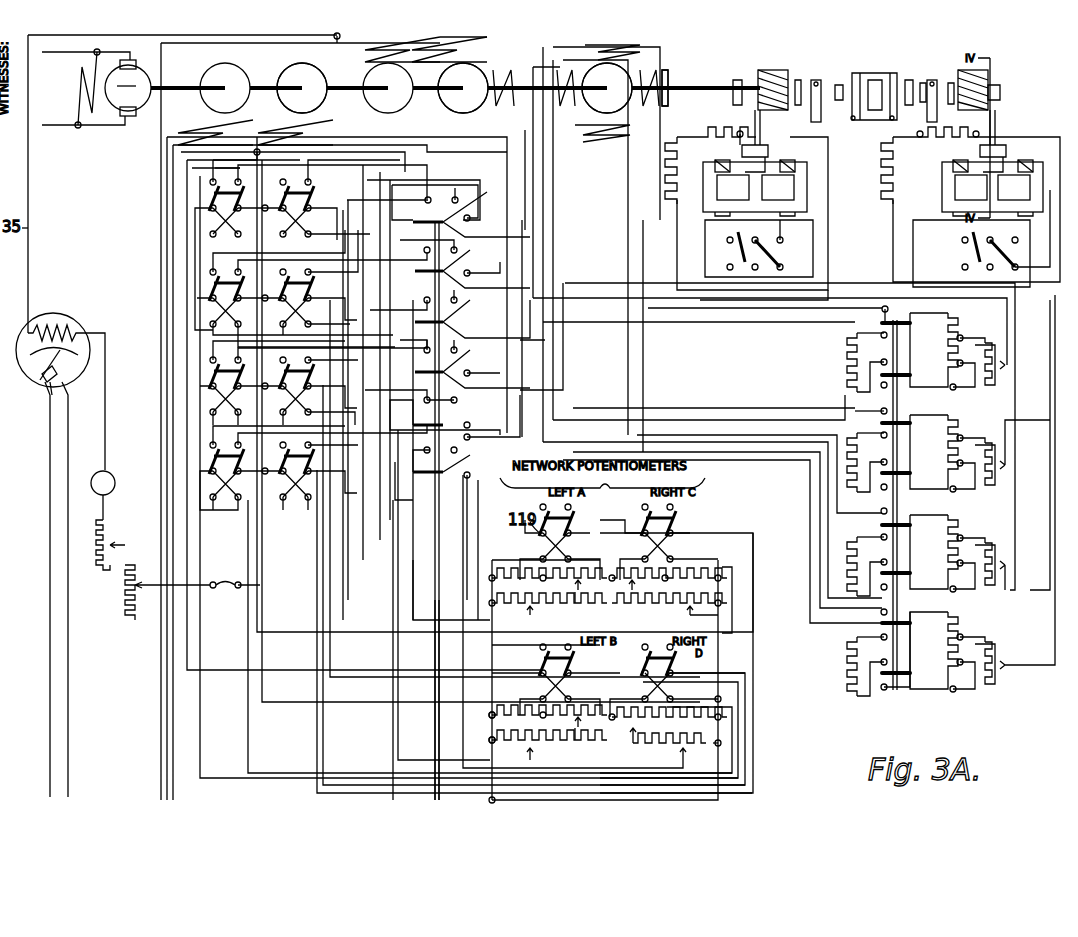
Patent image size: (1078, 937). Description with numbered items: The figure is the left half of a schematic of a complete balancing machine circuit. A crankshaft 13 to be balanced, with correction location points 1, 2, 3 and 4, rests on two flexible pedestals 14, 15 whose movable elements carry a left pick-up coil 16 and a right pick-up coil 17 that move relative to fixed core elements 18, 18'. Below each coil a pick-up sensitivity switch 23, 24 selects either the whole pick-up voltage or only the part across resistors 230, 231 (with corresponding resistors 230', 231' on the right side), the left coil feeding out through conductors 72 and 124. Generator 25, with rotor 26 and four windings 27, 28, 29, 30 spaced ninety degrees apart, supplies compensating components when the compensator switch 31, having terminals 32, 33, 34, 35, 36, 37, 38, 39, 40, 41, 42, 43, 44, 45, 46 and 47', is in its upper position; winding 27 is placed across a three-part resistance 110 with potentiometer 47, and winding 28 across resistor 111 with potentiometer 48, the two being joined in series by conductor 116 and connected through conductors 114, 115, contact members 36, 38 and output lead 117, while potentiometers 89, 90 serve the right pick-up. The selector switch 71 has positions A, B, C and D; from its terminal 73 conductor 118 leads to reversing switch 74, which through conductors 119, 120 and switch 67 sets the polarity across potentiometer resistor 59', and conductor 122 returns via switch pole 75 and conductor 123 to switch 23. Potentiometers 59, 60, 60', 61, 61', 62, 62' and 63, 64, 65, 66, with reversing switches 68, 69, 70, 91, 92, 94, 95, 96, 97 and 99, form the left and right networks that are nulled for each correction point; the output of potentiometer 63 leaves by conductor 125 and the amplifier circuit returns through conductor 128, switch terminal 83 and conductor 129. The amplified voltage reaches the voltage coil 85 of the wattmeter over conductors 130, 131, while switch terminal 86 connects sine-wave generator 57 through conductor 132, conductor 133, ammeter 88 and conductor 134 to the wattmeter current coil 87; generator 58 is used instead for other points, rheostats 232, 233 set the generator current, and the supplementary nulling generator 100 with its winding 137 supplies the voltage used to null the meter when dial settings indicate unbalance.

The supplementary generator 100 is at (388, 62).
The sine-wave generator 58 is at (302, 78).
The sine-wave generator 57 is at (463, 101).
The nulling generator winding 137 is at (257, 137).
The generator winding 28 is at (560, 78).
The generator winding 27 is at (595, 47).
The generator 25 is at (622, 41).
The rotor 26 is at (612, 80).
The generator winding 29 is at (668, 82).
The generator winding 30 is at (590, 137).
The conductor 132 is at (527, 150).
The pedestal 14 is at (760, 70).
The correction location point 1 is at (816, 80).
The crankshaft 13 is at (889, 80).
The correction location point 2 is at (855, 118).
The correction location point 3 is at (892, 118).
The correction location point 4 is at (935, 68).
The pedestal 15 is at (958, 72).
The left pick-up coil 16 is at (770, 160).
The fixed core element 18 is at (755, 188).
The right pick-up coil 17 is at (1005, 150).
The fixed core element 18' is at (992, 188).
The resistor 230 is at (728, 128).
The resistor 231 is at (746, 213).
The resistor 230' is at (948, 130).
The resistor 231' is at (952, 209).
The conductor 124 is at (812, 215).
The conductor 72 is at (825, 222).
The pick-up sensitivity switch 23 is at (770, 252).
The pick-up sensitivity switch 24 is at (1010, 250).
The compensator switch 31 is at (905, 503).
The switch terminal 32 is at (897, 312).
The switch terminal 33 is at (869, 362).
The switch terminal 34 is at (872, 375).
The switch terminal 35 is at (884, 385).
The contact member 36 is at (871, 404).
The resistance 110 is at (962, 340).
The potentiometer 47 is at (1000, 353).
The conductor 116 is at (966, 412).
The resistor 111 is at (962, 438).
The potentiometer 48 is at (996, 458).
The switch terminal 37 is at (869, 462).
The contact member 38 is at (884, 462).
The switch terminal 39 is at (884, 487).
The switch terminal 40 is at (873, 504).
The switch terminal 41 is at (884, 537).
The switch terminal 42 is at (884, 562).
The switch terminal 43 is at (884, 587).
The potentiometer 89 is at (996, 555).
The switch terminal 44 is at (884, 612).
The switch terminal 45 is at (884, 637).
The switch terminal 46 is at (884, 662).
The switch terminal 47' is at (914, 664).
The potentiometer 90 is at (996, 655).
The conductor 117 is at (960, 296).
The conductor 114 is at (758, 410).
The conductor 115 is at (798, 425).
The reversing switch 74 is at (215, 200).
The reversing switch 99 is at (313, 193).
The conductor 122 is at (253, 160).
The reversing switch 91 is at (245, 278).
The reversing switch 92 is at (318, 282).
The conductor 119 is at (195, 248).
The reversing switch 94 is at (243, 408).
The reversing switch 95 is at (322, 380).
The reversing switch 96 is at (248, 455).
The reversing switch 97 is at (318, 455).
The conductor 118 is at (400, 175).
The switch terminal 73 is at (443, 222).
The switch pole 75 is at (443, 271).
The conductor 123 is at (431, 301).
The switch terminal 86 is at (440, 430).
The conductor 133 is at (395, 462).
The switch terminal 83 is at (425, 480).
The conductor 129 is at (410, 612).
The selector switch 71 is at (435, 730).
The conductor 128 is at (393, 733).
The current coil 87 is at (58, 318).
The voltage coil 85 is at (45, 385).
The conductor 134 is at (106, 420).
The ammeter 88 is at (110, 472).
The rheostat 232 is at (110, 535).
The rheostat 233 is at (115, 590).
The conductor 131 is at (50, 720).
The conductor 130 is at (70, 735).
The conductor 120 is at (487, 566).
The reversing switch 67 is at (575, 523).
The reversing switch 69 is at (680, 518).
The potentiometer resistor 59' is at (548, 584).
The potentiometer 59 is at (548, 605).
The potentiometer 63 is at (510, 600).
The potentiometer 61 is at (668, 588).
The potentiometer 65 is at (669, 613).
The potentiometer 61' is at (711, 588).
The conductor 125 is at (492, 660).
The reversing switch 68 is at (577, 665).
The reversing switch 70 is at (642, 665).
The potentiometer 60' is at (548, 719).
The potentiometer 60 is at (548, 740).
The potentiometer 64 is at (530, 752).
The potentiometer 62 is at (667, 728).
The potentiometer 62' is at (675, 732).
The potentiometer 66 is at (697, 759).